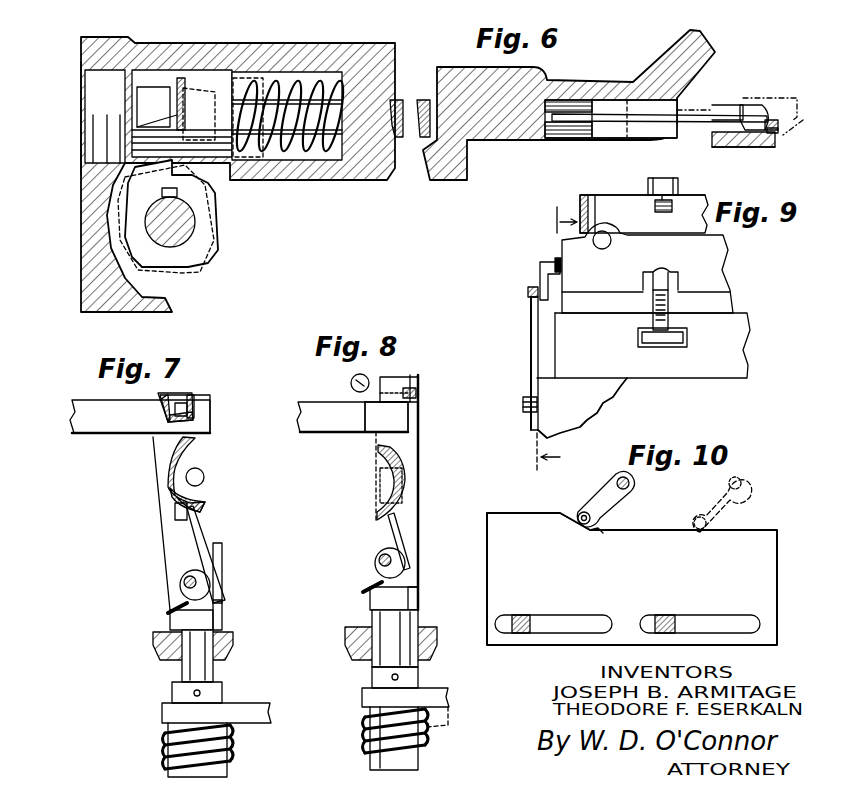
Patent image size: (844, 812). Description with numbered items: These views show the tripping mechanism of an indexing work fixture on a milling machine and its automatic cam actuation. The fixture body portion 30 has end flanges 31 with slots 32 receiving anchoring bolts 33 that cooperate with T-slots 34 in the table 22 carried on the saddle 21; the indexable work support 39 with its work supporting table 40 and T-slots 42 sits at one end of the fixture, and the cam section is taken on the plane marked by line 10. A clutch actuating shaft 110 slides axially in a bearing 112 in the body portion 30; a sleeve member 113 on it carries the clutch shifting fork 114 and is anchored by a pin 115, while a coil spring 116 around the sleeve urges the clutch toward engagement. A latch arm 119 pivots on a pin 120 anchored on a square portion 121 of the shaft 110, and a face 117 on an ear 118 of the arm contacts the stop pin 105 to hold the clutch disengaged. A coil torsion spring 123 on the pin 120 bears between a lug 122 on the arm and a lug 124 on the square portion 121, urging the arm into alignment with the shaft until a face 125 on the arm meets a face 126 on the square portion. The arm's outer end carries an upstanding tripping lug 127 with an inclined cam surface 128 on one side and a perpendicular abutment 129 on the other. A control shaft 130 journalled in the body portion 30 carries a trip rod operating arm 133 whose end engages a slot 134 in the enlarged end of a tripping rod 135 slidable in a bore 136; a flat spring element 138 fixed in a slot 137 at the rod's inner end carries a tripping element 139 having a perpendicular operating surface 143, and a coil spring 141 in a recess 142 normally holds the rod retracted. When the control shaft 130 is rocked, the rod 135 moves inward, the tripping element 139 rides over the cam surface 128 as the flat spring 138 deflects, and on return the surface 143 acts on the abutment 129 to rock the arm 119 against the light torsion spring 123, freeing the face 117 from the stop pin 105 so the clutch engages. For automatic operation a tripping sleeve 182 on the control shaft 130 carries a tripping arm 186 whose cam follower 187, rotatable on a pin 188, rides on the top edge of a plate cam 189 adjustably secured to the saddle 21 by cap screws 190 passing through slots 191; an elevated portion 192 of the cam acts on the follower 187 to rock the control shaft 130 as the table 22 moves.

In FIG. 9, the section line 10 is at (538, 338).
In FIG. 9, the saddle 21 is at (597, 400).
In FIG. 9, the table 22 is at (730, 343).
In FIG. 6, the body portion 30 is at (438, 163).
In FIG. 9, the body portion 30 is at (708, 258).
In FIG. 9, the end flanges 31 is at (598, 282).
In FIG. 9, the slots 32 is at (668, 307).
In FIG. 9, the anchoring bolts 33 is at (662, 267).
In FIG. 9, the T-slots 34 is at (642, 333).
In FIG. 9, the indexable work support 39 is at (575, 212).
In FIG. 9, the work supporting table 40 is at (623, 193).
In FIG. 9, the T-slots 42 is at (660, 207).
In FIG. 7, the stop pin 105 is at (197, 473).
In FIG. 8, the stop pin 105 is at (356, 380).
In FIG. 7, the shaft 110 is at (222, 632).
In FIG. 8, the shaft 110 is at (395, 633).
In FIG. 7, the bearing 112 is at (227, 648).
In FIG. 8, the bearing 112 is at (357, 648).
In FIG. 7, the sleeve member 113 is at (173, 767).
In FIG. 8, the sleeve member 113 is at (383, 757).
In FIG. 7, the clutch shifting fork 114 is at (233, 712).
In FIG. 8, the clutch shifting fork 114 is at (433, 698).
In FIG. 7, the pin 115 is at (222, 687).
In FIG. 8, the pin 115 is at (403, 675).
In FIG. 7, the coil spring 116 is at (180, 732).
In FIG. 8, the coil spring 116 is at (383, 718).
In FIG. 7, the abutment face 117 is at (173, 465).
In FIG. 8, the abutment face 117 is at (403, 453).
In FIG. 7, the ear 118 is at (197, 483).
In FIG. 8, the ear 118 is at (390, 473).
In FIG. 6, the latch arm 119 is at (757, 150).
In FIG. 7, the latch arm 119 is at (158, 442).
In FIG. 8, the latch arm 119 is at (410, 487).
In FIG. 7, the pin 120 is at (183, 585).
In FIG. 8, the pin 120 is at (380, 550).
In FIG. 7, the square portion 121 is at (183, 622).
In FIG. 8, the square portion 121 is at (377, 600).
In FIG. 7, the lug 122 is at (195, 520).
In FIG. 7, the coil torsion spring 123 is at (177, 532).
In FIG. 8, the coil torsion spring 123 is at (402, 522).
In FIG. 7, the lug 124 is at (176, 613).
In FIG. 8, the lug 124 is at (377, 590).
In FIG. 7, the face 125 is at (223, 617).
In FIG. 8, the face 125 is at (408, 590).
In FIG. 7, the face 126 is at (222, 603).
In FIG. 8, the face 126 is at (413, 585).
In FIG. 6, the tripping lug 127 is at (770, 140).
In FIG. 7, the tripping lug 127 is at (185, 403).
In FIG. 8, the tripping lug 127 is at (415, 392).
In FIG. 6, the inclined cam surface 128 is at (735, 147).
In FIG. 7, the inclined cam surface 128 is at (163, 410).
In FIG. 8, the inclined cam surface 128 is at (407, 388).
In FIG. 6, the tripping abutment 129 is at (778, 126).
In FIG. 6, the control shaft 130 is at (172, 228).
In FIG. 6, the trip rod operating arm 133 is at (172, 110).
In FIG. 6, the slot 134 is at (150, 80).
In FIG. 6, the tripping rod 135 is at (428, 97).
In FIG. 6, the bore 136 is at (582, 102).
In FIG. 6, the slot 137 is at (550, 125).
In FIG. 6, the flat spring element 138 is at (617, 117).
In FIG. 7, the flat spring element 138 is at (82, 412).
In FIG. 8, the flat spring element 138 is at (355, 420).
In FIG. 6, the tripping element 139 is at (755, 110).
In FIG. 7, the tripping element 139 is at (203, 415).
In FIG. 8, the tripping element 139 is at (397, 417).
In FIG. 6, the coil spring 141 is at (283, 82).
In FIG. 6, the recess 142 is at (317, 78).
In FIG. 6, the operating abutment 143 is at (740, 128).
In FIG. 7, the operating abutment 143 is at (190, 407).
In FIG. 9, the tripping sleeve 182 is at (556, 258).
In FIG. 10, the tripping sleeve 182 is at (619, 481).
In FIG. 9, the tripping arm 186 is at (540, 265).
In FIG. 10, the tripping arm 186 is at (598, 492).
In FIG. 9, the cam follower 187 is at (528, 291).
In FIG. 10, the cam follower 187 is at (603, 532).
In FIG. 10, the pin 188 is at (612, 512).
In FIG. 9, the plate cam 189 is at (532, 337).
In FIG. 10, the plate cam 189 is at (778, 553).
In FIG. 9, the cap screws 190 is at (527, 400).
In FIG. 10, the cap screws 190 is at (520, 617).
In FIG. 10, the slots 191 is at (587, 620).
In FIG. 10, the elevated portion 192 is at (520, 513).